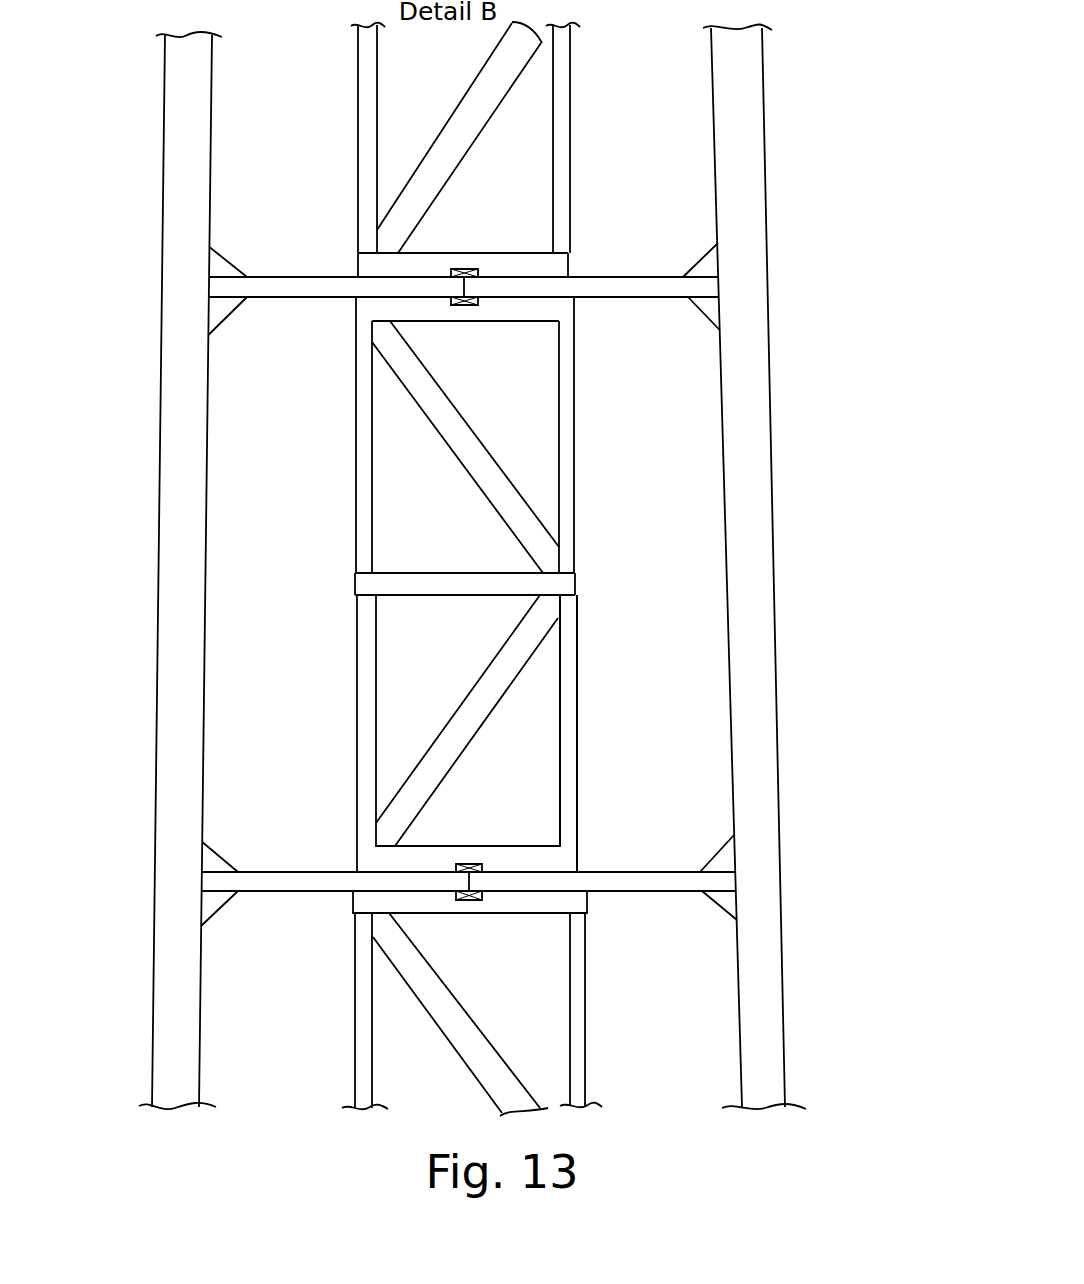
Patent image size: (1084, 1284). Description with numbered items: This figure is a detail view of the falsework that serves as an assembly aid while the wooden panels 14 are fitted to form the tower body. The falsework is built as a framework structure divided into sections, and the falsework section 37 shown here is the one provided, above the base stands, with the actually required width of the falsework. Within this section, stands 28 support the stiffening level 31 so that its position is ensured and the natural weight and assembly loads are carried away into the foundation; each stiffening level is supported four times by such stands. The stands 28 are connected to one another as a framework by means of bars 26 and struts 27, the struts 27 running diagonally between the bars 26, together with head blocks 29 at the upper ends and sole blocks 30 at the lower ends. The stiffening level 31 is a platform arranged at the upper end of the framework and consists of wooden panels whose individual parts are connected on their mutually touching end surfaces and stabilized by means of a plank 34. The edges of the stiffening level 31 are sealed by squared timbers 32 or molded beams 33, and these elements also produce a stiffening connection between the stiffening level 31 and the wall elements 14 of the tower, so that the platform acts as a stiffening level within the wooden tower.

The wooden panel 14 is at (423, 584).
The bar 26 is at (497, 585).
The strut 27 is at (503, 507).
The stand 28 is at (563, 685).
The head block 29 is at (518, 310).
The sole block 30 is at (522, 267).
The stiffening level 31 is at (638, 290).
The squared timber 32 is at (708, 267).
The molded beam 33 is at (833, 220).
The plank 34 is at (463, 305).
The falsework section 37 is at (226, 570).